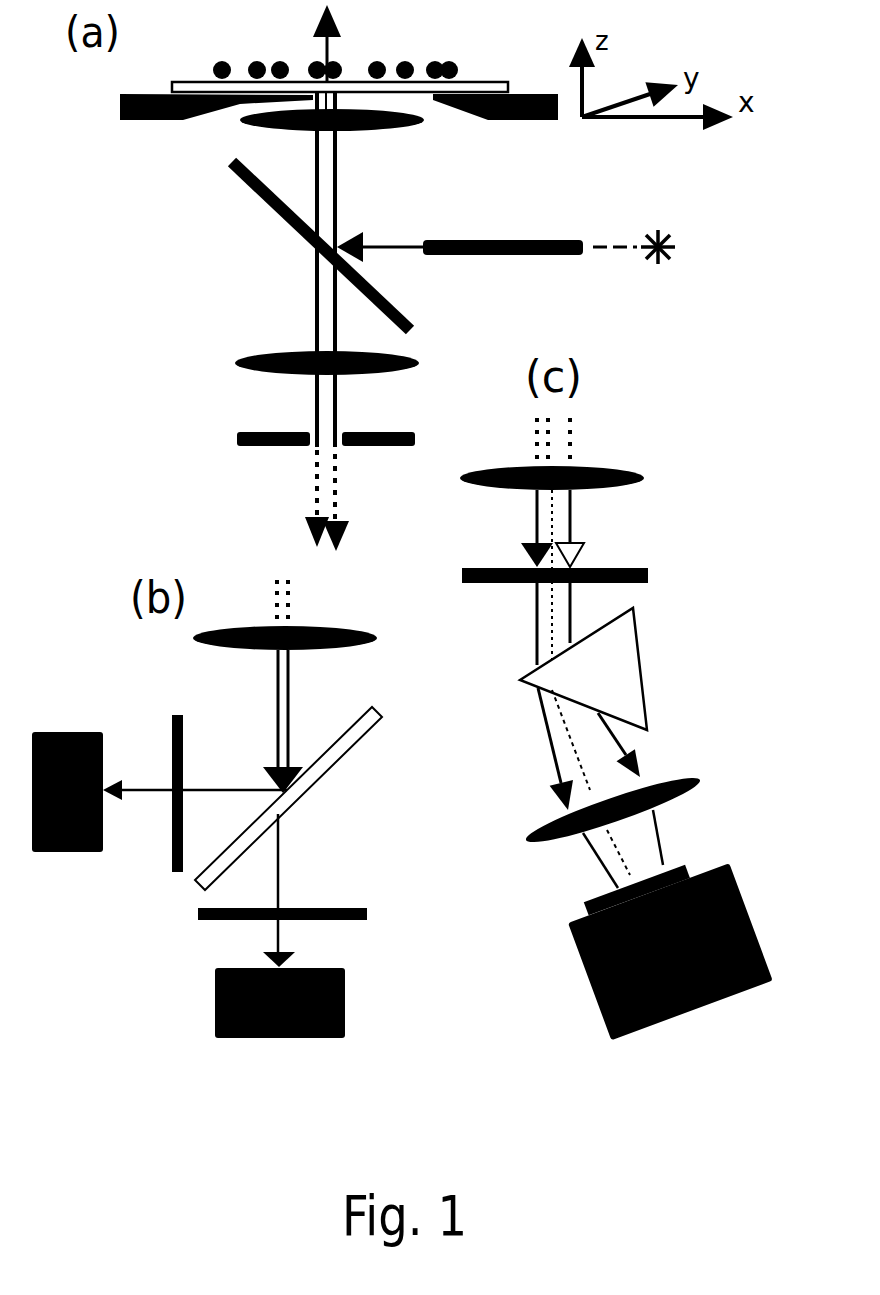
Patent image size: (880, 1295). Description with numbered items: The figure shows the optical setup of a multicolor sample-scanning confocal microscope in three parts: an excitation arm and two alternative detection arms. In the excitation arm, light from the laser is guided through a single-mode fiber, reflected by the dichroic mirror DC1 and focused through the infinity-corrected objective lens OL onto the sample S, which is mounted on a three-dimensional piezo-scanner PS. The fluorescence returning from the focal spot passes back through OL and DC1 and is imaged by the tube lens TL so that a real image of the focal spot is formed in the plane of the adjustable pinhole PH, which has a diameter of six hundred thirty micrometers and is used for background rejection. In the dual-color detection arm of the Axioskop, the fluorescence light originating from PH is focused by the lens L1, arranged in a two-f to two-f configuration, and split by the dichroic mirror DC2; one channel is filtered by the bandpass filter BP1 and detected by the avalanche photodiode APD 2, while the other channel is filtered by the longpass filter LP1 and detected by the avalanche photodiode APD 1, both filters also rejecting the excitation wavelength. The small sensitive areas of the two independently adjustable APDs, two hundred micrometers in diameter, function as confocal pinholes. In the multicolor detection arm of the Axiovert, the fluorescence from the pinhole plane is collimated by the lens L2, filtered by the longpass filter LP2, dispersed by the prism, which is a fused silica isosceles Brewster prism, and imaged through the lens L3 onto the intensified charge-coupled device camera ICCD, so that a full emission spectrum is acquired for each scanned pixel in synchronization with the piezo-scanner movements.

In FIG. 1a, the sample S is at (317, 60).
In FIG. 1a, the piezo-scanner PS is at (339, 127).
In FIG. 1a, the objective lens OL is at (336, 140).
In FIG. 1a, the dichroic mirror DC1 is at (294, 246).
In FIG. 1a, the single-mode fiber is at (460, 228).
In FIG. 1a, the element laser is at (644, 267).
In FIG. 1a, the tube lens TL is at (298, 364).
In FIG. 1a, the adjustable pinhole PH is at (296, 437).
In FIG. 1b, the lens L1 is at (296, 617).
In FIG. 1b, the bandpass filter BP1 is at (163, 769).
In FIG. 1b, the avalanche photodiode APD 2 is at (67, 792).
In FIG. 1b, the dichroic mirror DC2 is at (291, 798).
In FIG. 1b, the longpass filter LP1 is at (290, 890).
In FIG. 1b, the avalanche photodiode APD 1 is at (280, 1003).
In FIG. 1c, the lens L2 is at (571, 462).
In FIG. 1c, the longpass filter LP2 is at (595, 579).
In FIG. 1c, the element prism is at (632, 669).
In FIG. 1c, the lens L3 is at (635, 806).
In FIG. 1c, the ICCD camera ICCD is at (668, 945).